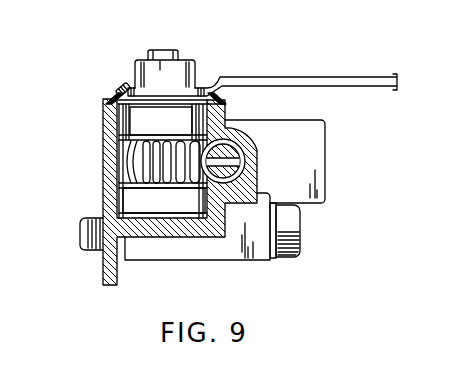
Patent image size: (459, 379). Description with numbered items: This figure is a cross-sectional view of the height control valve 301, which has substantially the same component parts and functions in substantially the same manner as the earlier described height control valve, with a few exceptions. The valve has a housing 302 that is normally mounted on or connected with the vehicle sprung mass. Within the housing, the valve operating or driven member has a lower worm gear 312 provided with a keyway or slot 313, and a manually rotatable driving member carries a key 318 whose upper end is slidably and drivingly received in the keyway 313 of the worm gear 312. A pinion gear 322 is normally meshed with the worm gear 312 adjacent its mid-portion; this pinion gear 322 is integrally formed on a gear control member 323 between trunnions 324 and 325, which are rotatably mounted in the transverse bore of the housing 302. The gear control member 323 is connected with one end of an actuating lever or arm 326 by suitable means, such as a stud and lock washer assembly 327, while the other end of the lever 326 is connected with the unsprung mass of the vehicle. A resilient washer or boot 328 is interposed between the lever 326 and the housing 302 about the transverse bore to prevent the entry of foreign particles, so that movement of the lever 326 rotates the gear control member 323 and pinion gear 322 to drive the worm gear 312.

The height control valve 301 is at (97, 282).
The housing 302 is at (124, 281).
The worm gear portion 312 is at (228, 140).
The keyway 313 is at (225, 166).
The key 318 is at (236, 145).
The pinion gear 322 is at (128, 163).
The gear control member 323 is at (173, 133).
The trunnion 324 is at (125, 125).
The trunnion 325 is at (128, 202).
The actuating lever 326 is at (352, 77).
The stud and lock washer assembly 327 is at (186, 61).
The resilient washer 328 is at (110, 98).